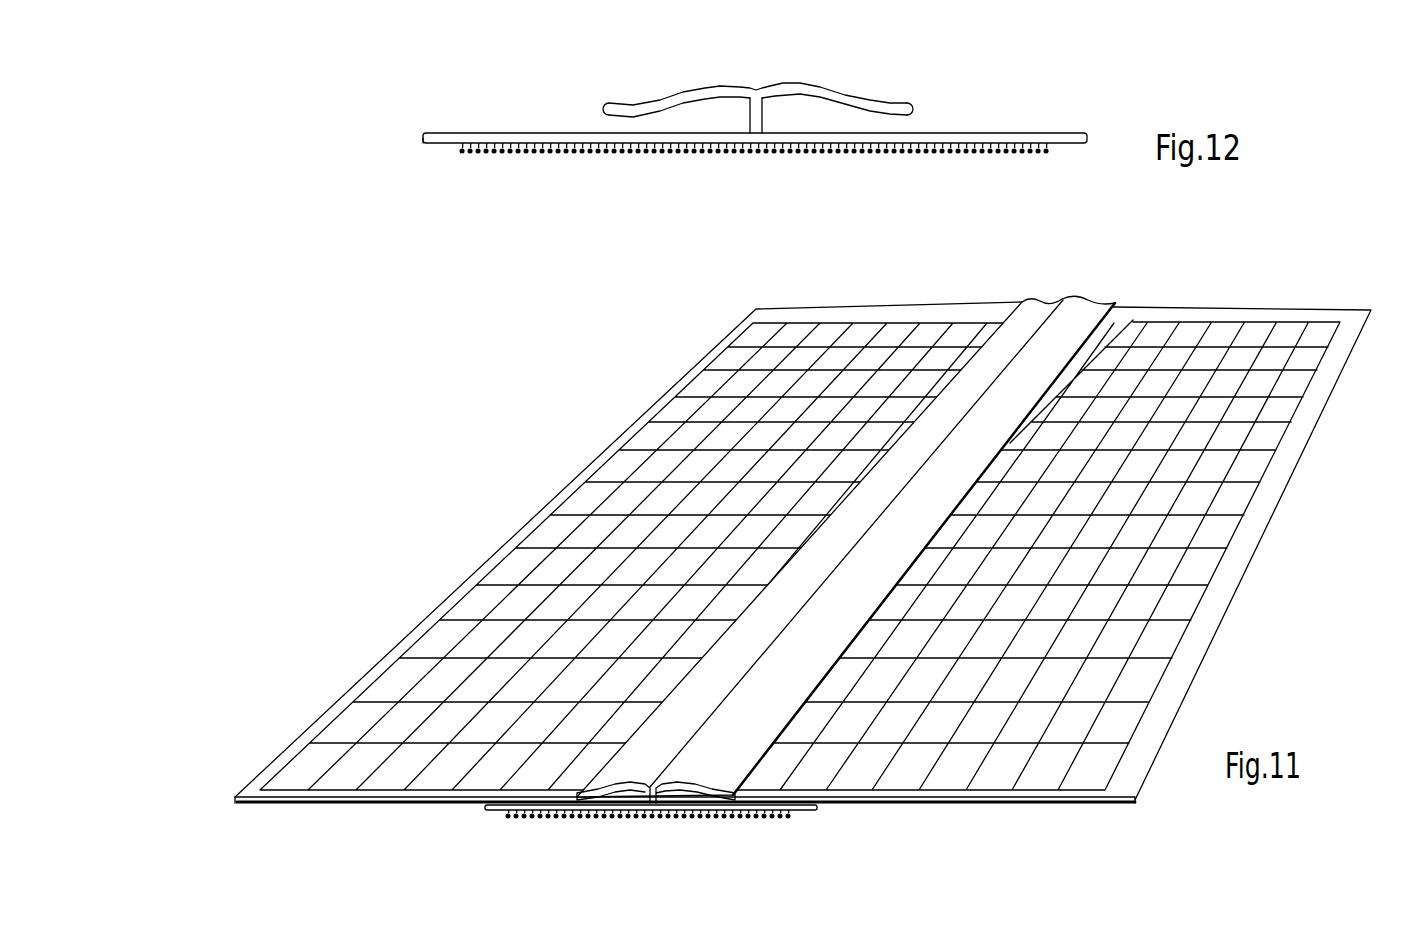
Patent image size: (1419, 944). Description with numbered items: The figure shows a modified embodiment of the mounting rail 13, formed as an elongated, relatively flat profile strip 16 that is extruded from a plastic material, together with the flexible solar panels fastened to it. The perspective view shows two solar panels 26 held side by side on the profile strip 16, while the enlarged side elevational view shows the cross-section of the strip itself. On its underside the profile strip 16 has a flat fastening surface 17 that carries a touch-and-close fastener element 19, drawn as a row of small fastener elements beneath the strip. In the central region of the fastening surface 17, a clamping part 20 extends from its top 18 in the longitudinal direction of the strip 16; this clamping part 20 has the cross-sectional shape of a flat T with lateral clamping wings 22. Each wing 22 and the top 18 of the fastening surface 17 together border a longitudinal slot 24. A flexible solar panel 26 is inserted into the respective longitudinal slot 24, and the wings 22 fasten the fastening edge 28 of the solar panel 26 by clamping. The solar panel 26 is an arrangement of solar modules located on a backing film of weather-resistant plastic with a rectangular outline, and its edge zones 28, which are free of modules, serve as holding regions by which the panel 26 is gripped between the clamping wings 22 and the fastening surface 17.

In FIG. 12, the mounting rail 13 is at (822, 67).
In FIG. 12, the profile strip 16 is at (728, 85).
In FIG. 11, the profile strip 16 is at (1100, 302).
In FIG. 12, the fastening surface 17 is at (447, 147).
In FIG. 12, the top of the fastening surface 18 is at (495, 133).
In FIG. 11, the top of the fastening surface 18 is at (651, 807).
In FIG. 12, the touch-and-close fastener element 19 is at (993, 153).
In FIG. 11, the touch-and-close fastener element 19 is at (812, 810).
In FIG. 12, the clamping part 20 is at (765, 118).
In FIG. 12, the clamping wings 22 is at (667, 97).
In FIG. 11, the clamping wings 22 is at (1047, 340).
In FIG. 12, the longitudinal slot 24 is at (618, 123).
In FIG. 11, the solar panel 26 is at (832, 332).
In FIG. 11, the fastening edge 28 is at (603, 463).